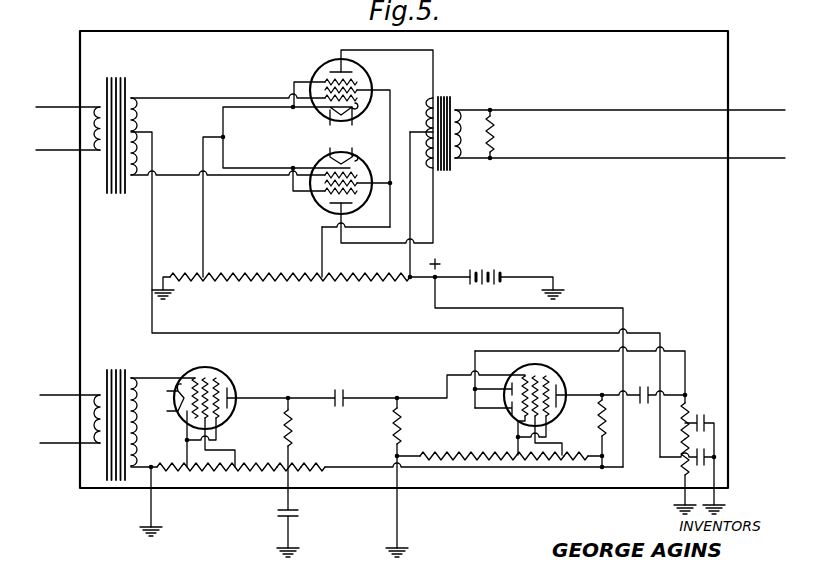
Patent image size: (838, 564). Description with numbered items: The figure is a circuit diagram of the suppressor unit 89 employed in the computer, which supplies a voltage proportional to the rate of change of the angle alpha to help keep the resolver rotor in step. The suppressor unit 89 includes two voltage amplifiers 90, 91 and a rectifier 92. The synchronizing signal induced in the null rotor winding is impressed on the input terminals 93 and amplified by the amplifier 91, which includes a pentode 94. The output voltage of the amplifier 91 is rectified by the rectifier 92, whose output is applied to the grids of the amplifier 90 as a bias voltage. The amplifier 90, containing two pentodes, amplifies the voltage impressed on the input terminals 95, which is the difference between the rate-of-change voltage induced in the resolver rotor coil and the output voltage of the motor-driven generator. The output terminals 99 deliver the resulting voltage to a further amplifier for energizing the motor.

The suppressor unit 89 is at (705, 248).
The voltage amplifier 90 is at (440, 80).
The voltage amplifier 91 is at (376, 438).
The rectifier 92 is at (564, 375).
The input terminals 93 is at (69, 400).
The pentode 94 is at (226, 376).
The input terminals 95 is at (69, 109).
The output terminals 99 is at (748, 112).